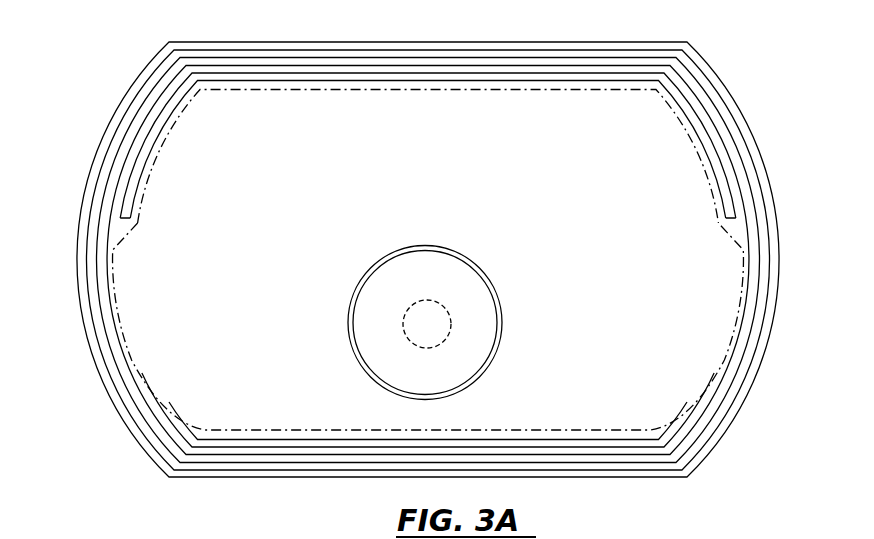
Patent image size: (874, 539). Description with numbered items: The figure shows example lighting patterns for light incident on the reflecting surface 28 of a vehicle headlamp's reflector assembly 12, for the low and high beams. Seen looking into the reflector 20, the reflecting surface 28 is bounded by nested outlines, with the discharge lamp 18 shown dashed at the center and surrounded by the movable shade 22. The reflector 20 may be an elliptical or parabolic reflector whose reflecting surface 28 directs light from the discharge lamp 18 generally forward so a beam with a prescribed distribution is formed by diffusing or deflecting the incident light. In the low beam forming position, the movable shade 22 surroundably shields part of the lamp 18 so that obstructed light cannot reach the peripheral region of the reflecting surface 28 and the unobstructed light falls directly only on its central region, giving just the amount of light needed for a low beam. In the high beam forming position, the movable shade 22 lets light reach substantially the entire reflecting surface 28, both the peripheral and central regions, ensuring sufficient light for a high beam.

The reflector assembly 12 is at (742, 52).
The reflector 20 is at (738, 97).
The reflecting surface 28 is at (650, 368).
The movable shade 22 is at (487, 268).
The discharge lamp 18 is at (449, 345).